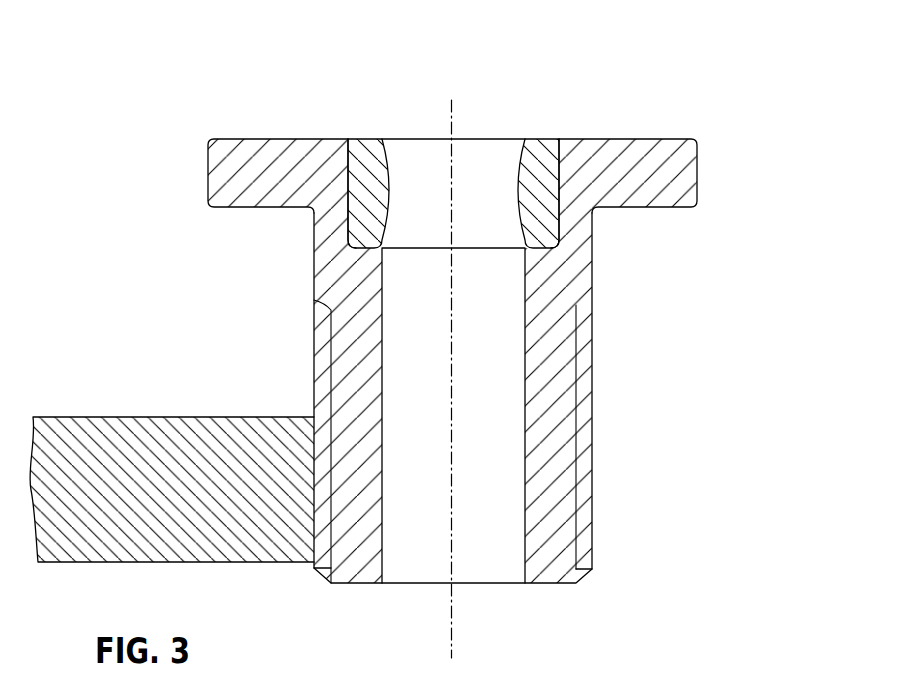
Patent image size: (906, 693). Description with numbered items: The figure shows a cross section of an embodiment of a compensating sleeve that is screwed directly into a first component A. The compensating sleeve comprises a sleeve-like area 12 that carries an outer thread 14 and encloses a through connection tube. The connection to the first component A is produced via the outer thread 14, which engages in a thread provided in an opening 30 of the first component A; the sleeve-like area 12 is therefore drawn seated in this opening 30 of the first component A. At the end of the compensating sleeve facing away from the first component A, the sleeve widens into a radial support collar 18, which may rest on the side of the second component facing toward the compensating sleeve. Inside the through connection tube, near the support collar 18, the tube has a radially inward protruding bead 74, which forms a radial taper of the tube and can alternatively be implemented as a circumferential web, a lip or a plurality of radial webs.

The sleeve-like area 12 is at (562, 415).
The outer thread 14 is at (583, 488).
The support collar 18 is at (675, 168).
The opening 30 is at (312, 485).
The radially inward protruding bead 74 is at (366, 165).
The first component A is at (177, 445).